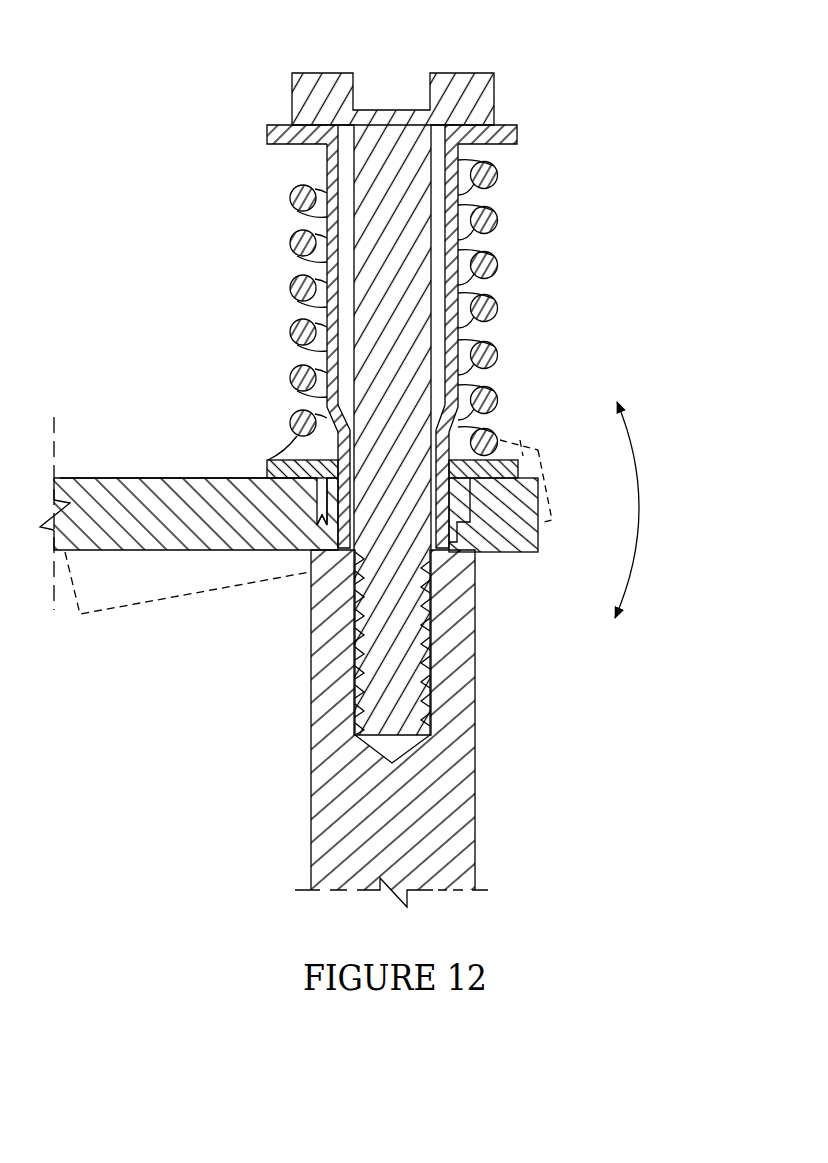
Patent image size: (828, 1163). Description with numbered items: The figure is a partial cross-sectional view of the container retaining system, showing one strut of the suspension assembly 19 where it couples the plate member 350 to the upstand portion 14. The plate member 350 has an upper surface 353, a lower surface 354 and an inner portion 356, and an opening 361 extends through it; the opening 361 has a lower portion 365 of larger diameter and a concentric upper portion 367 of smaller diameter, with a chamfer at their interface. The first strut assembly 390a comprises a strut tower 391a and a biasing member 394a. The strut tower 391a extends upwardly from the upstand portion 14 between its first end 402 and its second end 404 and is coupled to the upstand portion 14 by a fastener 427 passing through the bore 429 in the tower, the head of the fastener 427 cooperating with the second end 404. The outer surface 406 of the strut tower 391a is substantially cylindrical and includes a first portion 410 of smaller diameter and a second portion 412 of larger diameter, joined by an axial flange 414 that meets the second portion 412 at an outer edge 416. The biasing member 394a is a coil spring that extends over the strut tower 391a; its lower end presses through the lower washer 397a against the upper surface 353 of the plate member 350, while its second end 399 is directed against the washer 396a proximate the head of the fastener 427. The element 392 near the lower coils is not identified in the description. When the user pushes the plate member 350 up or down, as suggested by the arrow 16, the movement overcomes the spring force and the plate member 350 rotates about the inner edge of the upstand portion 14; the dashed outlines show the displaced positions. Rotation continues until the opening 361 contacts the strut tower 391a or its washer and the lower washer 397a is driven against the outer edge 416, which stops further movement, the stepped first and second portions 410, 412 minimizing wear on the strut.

The upstand portion 14 is at (481, 810).
The pivot direction arrow 16 is at (658, 436).
The suspension assembly 19 is at (636, 160).
The plate member 350 is at (134, 470).
The upper surface 353 is at (193, 478).
The lower surface 354 is at (132, 580).
The inner portion 356 is at (503, 591).
The opening 361 is at (518, 440).
The lower portion 365 is at (520, 546).
The upper portion 367 is at (483, 497).
The first strut assembly 390a is at (503, 281).
The strut tower 391a is at (483, 196).
The spring lower end 392 is at (537, 455).
The biasing member 394a is at (290, 243).
The washer 396a is at (530, 472).
The lower washer 397a is at (518, 134).
The second end 399 is at (497, 172).
The first end 402 is at (323, 517).
The second end 404 is at (275, 172).
The outer surface 406 is at (487, 337).
The first portion 410 is at (317, 507).
The second portion 412 is at (310, 317).
The axial flange 414 is at (340, 412).
The outer edge 416 is at (335, 440).
The fastener 427 is at (375, 71).
The bore 429 is at (437, 138).